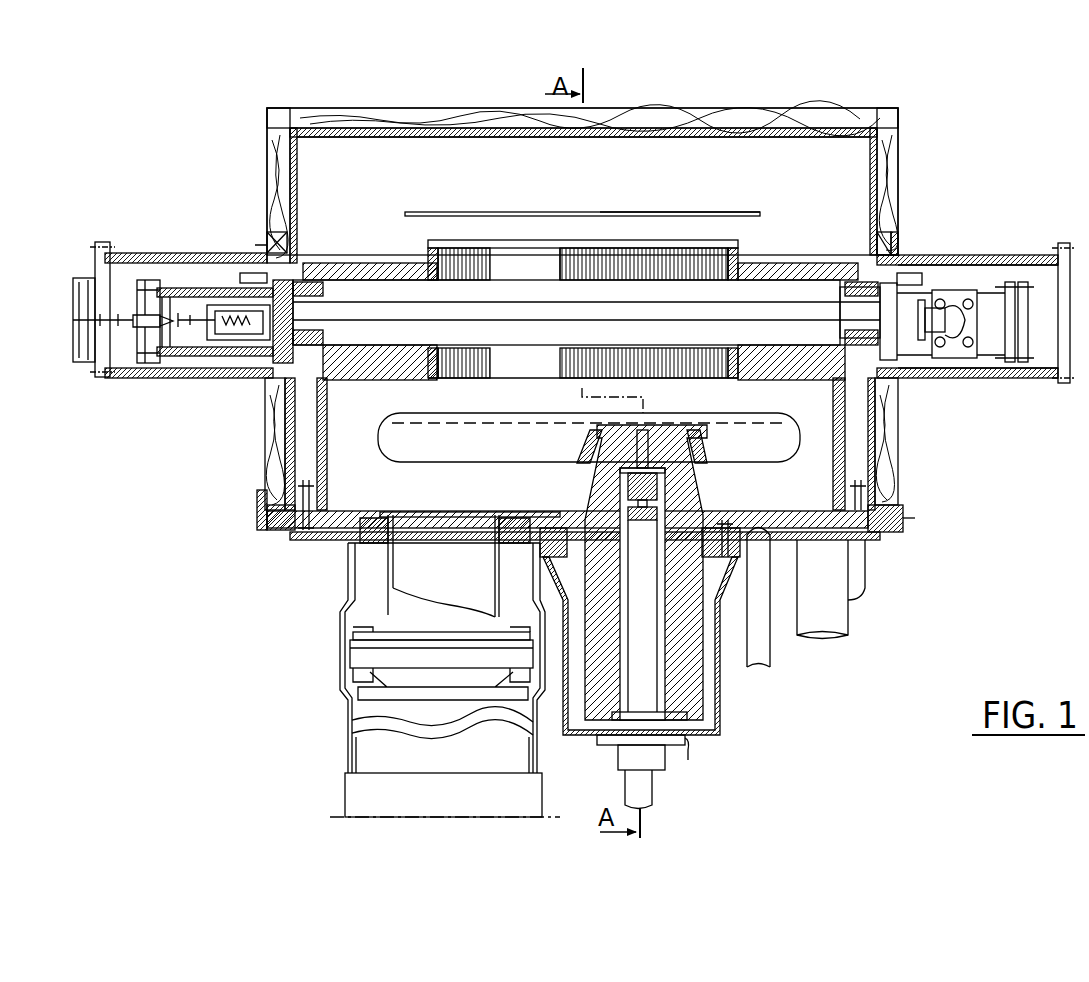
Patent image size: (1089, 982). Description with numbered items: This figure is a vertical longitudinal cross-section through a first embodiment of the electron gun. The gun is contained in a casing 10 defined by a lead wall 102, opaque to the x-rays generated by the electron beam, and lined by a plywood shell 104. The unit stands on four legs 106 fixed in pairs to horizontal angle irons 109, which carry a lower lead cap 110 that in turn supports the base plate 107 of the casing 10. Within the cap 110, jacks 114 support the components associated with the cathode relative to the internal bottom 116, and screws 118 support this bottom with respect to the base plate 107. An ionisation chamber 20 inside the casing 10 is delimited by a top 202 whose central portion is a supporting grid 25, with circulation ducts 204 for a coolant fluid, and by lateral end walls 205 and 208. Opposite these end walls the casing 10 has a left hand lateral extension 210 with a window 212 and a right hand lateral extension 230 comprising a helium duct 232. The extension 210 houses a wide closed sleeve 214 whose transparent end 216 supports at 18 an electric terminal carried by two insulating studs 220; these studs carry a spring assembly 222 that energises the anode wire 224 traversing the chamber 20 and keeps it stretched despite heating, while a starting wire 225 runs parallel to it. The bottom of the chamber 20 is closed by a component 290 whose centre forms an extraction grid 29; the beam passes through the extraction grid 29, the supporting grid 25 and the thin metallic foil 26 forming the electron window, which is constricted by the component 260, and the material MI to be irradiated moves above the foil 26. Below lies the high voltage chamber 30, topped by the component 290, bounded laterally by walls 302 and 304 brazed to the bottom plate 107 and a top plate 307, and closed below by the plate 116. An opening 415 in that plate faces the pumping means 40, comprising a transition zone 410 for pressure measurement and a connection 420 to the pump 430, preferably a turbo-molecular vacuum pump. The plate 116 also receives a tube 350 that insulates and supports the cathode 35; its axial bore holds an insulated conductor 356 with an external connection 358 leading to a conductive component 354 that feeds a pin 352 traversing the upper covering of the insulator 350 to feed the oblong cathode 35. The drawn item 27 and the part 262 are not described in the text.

The casing 10 is at (215, 145).
The lead wall 102 is at (386, 120).
The plywood shell 104 is at (296, 120).
The top 202 is at (842, 228).
The motor chamber 27 is at (449, 162).
The thin metallic foil 26 is at (492, 246).
The material to be irradiated MI is at (629, 212).
The supporting grid 25 is at (668, 264).
The component 260 is at (742, 212).
The rotor ring 262 is at (796, 262).
The anode wire 224 is at (372, 300).
The extraction grid 29 is at (452, 375).
The component 290 is at (790, 375).
The ionisation chamber 20 is at (405, 298).
The starting wire 225 is at (345, 312).
The left hand lateral extension 210 is at (178, 248).
The electric terminal 18 is at (170, 253).
The window 212 is at (78, 325).
The end of sleeve 216 is at (112, 368).
The closed sleeve 214 is at (143, 362).
The insulating studs 220 is at (186, 362).
The spring assembly 222 is at (223, 358).
The lateral end wall 205 is at (270, 240).
The right hand lateral extension 230 is at (1015, 250).
The lateral end wall 208 is at (890, 222).
The circulation ducts 204 is at (910, 273).
The helium duct 232 is at (968, 350).
The wall 302 is at (275, 440).
The top plate 307 is at (265, 400).
The wall 304 is at (850, 437).
The internal bottom 116 is at (805, 522).
The base plate 107 is at (905, 512).
The screws 118 is at (862, 552).
The opening 415 is at (452, 512).
The high voltage chamber 30 is at (499, 409).
The cathode 35 is at (512, 447).
The tube 350 is at (700, 700).
The insulated conductor 356 is at (655, 668).
The pin 352 is at (652, 447).
The component 354 is at (660, 482).
The lower lead cap 110 is at (720, 742).
The external connection 358 is at (652, 776).
The jacks 114 is at (762, 640).
The legs 106 is at (835, 615).
The angle irons 109 is at (862, 592).
The transition zone 410 is at (461, 589).
The pumping means 40 is at (305, 712).
The connection 420 is at (365, 748).
The pump 430 is at (360, 793).